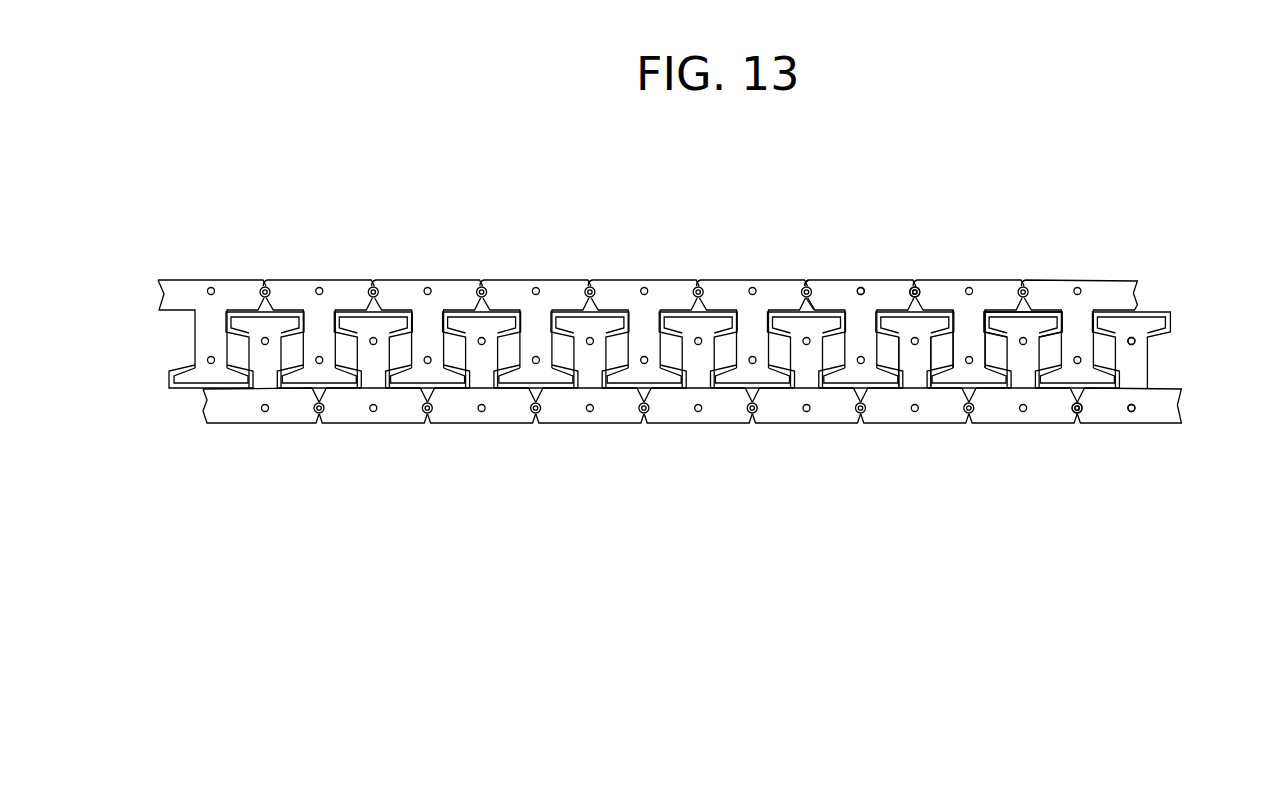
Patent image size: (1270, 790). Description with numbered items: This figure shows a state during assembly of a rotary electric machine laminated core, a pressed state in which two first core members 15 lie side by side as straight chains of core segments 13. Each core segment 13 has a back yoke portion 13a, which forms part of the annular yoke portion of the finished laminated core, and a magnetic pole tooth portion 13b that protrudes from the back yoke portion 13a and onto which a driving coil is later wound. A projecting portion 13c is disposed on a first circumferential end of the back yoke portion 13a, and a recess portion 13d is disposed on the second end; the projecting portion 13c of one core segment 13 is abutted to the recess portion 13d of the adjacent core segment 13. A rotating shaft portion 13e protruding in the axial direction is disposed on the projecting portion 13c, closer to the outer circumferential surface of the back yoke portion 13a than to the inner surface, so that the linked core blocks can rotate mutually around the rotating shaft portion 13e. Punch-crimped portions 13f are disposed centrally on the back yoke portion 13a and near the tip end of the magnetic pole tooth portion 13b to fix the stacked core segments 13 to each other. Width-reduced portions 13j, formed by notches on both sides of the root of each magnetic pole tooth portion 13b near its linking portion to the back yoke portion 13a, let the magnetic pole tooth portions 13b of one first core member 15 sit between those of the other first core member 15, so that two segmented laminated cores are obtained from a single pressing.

The core segment 13 is at (855, 280).
The back yoke portion 13a is at (877, 286).
The magnetic pole tooth portion 13b is at (966, 347).
The projecting portion 13c is at (916, 300).
The recess portion 13d is at (820, 284).
The rotating shaft portion 13e is at (1079, 413).
The punch-crimped portions 13f is at (1136, 345).
The width-reduced portions 13j is at (981, 340).
The first core member 15 is at (1139, 304).